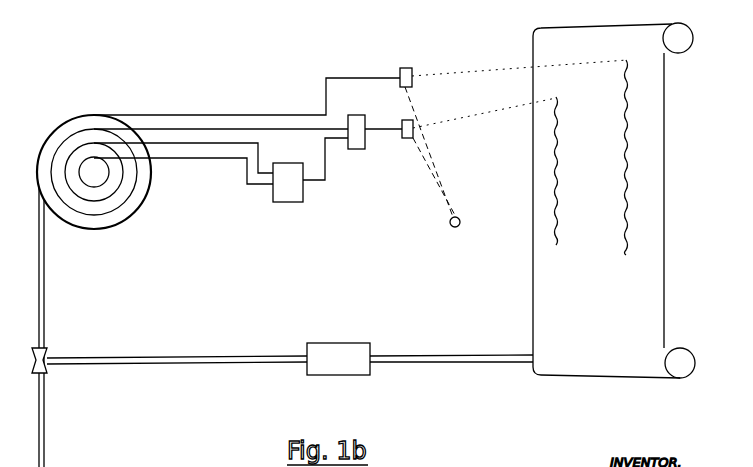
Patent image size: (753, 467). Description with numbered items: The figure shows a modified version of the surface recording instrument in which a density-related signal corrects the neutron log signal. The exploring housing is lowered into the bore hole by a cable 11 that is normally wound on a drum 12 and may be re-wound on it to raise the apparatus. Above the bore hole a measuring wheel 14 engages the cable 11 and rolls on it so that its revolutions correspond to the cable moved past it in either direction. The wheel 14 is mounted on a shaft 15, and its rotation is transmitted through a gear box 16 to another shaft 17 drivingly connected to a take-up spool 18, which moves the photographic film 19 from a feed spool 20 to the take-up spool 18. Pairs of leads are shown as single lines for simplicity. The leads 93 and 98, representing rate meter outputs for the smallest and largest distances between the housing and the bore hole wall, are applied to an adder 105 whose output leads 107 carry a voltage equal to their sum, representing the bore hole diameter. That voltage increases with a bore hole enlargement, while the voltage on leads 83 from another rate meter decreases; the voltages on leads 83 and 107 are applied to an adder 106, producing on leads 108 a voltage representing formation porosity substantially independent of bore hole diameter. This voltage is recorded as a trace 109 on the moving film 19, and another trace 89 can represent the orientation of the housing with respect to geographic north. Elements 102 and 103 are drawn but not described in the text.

The cable 11 is at (44, 282).
The drum 12 is at (143, 226).
The measuring wheel 14 is at (48, 352).
The shaft 15 is at (200, 365).
The gear box 16 is at (357, 376).
The shaft 17 is at (470, 363).
The take-up spool 18 is at (690, 372).
The photographic film 19 is at (664, 273).
The feed spool 20 is at (690, 37).
The leads 83 is at (250, 129).
The trace 89 is at (627, 130).
The leads 93 is at (195, 143).
The leads 98 is at (202, 158).
The conductor line 102 is at (340, 78).
The transducer 103 is at (410, 66).
The adder 105 is at (303, 199).
The adder 106 is at (365, 147).
The output leads 107 is at (327, 165).
The leads 108 is at (383, 129).
The trace 109 is at (556, 166).